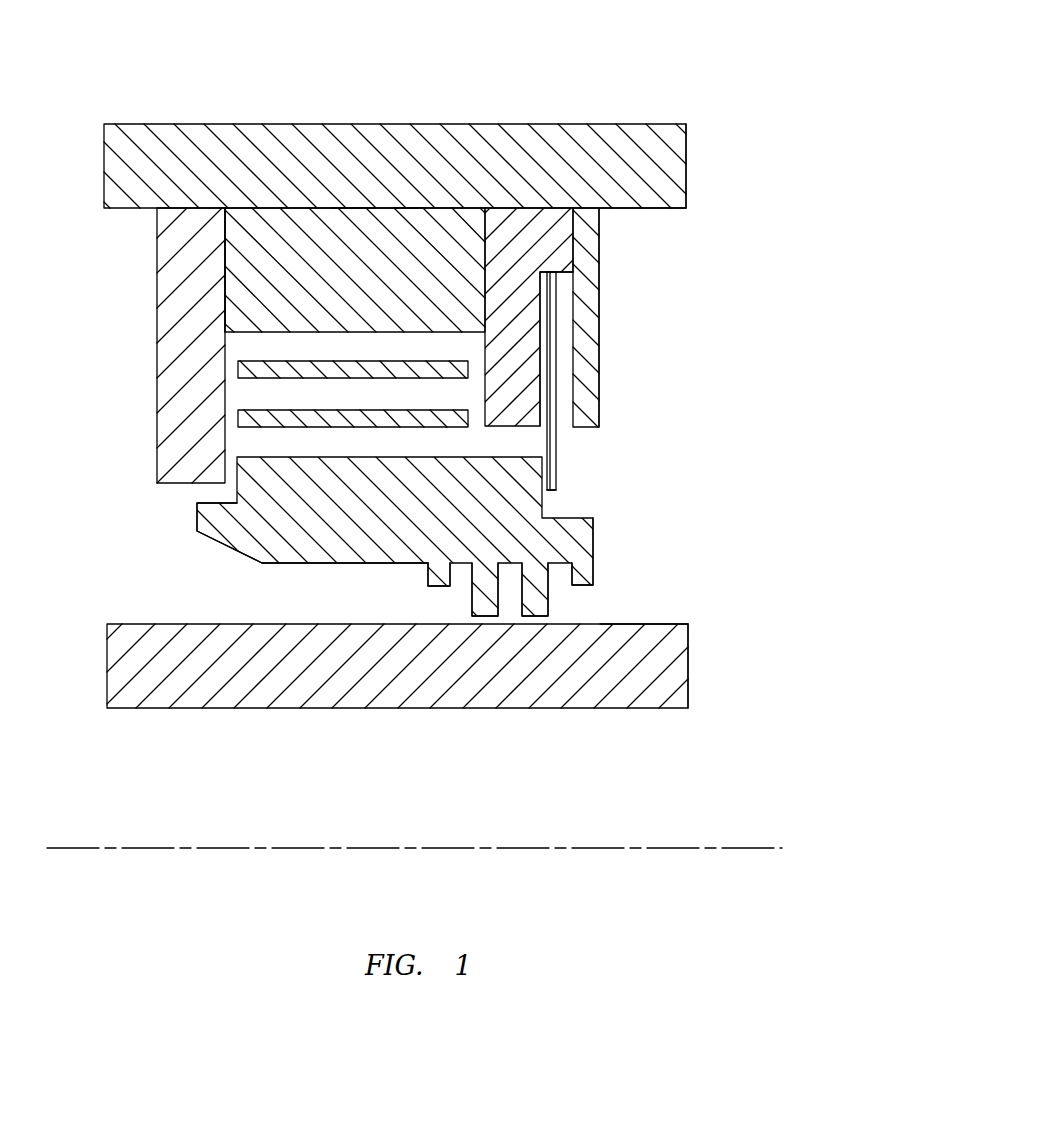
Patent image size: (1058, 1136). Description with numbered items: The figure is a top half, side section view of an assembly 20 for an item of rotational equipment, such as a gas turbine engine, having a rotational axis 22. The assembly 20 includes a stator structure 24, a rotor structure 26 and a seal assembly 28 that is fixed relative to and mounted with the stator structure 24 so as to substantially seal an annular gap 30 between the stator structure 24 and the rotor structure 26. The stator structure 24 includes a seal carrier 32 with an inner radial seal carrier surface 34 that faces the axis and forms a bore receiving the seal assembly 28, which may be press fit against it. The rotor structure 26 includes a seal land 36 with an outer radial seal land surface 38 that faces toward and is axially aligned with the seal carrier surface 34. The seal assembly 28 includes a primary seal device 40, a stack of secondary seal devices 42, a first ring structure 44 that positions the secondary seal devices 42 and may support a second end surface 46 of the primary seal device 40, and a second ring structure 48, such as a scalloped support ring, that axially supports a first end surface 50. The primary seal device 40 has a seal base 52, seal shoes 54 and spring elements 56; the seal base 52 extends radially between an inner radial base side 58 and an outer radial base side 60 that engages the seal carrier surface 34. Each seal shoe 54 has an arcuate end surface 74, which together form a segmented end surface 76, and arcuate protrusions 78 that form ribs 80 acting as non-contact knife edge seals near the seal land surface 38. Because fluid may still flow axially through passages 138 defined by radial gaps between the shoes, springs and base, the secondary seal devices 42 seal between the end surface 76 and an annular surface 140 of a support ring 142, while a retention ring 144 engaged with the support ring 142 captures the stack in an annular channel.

The assembly 20 is at (673, 70).
The rotational axis 22 is at (681, 850).
The stator structure 24 is at (686, 145).
The rotor structure 26 is at (688, 668).
The seal assembly 28 is at (665, 390).
The annular gap 30 is at (128, 455).
The seal carrier 32 is at (688, 168).
The inner radial seal carrier surface 34 is at (665, 209).
The seal land 36 is at (688, 695).
The outer radial seal land surface 38 is at (688, 624).
The primary seal device 40 is at (194, 533).
The secondary seal devices 42 is at (548, 483).
The first ring structure 44 is at (599, 258).
The second end surface 46 is at (489, 243).
The second ring structure 48 is at (157, 310).
The first end surface 50 is at (225, 255).
The seal base 52 is at (352, 222).
The seal shoes 54 is at (299, 547).
The spring elements 56 is at (247, 419).
The inner radial base side 58 is at (287, 328).
The outer radial base side 60 is at (408, 208).
The arcuate end surface 74 is at (440, 537).
The end surface 76 is at (547, 502).
The arcuate protrusions 78 is at (513, 601).
The ribs 80 is at (430, 575).
The passages 138 is at (372, 356).
The annular surface 140 is at (545, 350).
The secondary seal device support ring 142 is at (545, 223).
The retention ring 144 is at (600, 297).